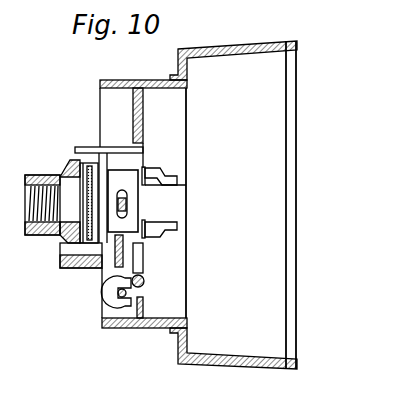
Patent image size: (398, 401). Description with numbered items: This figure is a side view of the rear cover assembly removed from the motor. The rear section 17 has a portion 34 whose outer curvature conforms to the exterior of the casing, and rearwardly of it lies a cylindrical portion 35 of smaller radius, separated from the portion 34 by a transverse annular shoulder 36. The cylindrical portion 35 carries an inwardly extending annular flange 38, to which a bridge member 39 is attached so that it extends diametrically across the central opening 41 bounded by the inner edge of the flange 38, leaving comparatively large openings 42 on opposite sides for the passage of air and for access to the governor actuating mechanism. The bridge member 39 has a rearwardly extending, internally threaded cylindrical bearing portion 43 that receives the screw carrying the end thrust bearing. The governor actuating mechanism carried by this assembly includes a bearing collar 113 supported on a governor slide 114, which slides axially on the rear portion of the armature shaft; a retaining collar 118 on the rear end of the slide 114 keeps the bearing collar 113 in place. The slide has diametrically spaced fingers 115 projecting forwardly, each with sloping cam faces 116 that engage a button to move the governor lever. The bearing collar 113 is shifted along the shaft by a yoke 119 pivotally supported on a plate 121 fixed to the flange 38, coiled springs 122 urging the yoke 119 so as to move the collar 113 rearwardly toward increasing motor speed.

The rear section 17 is at (240, 46).
The portion 34 is at (283, 46).
The cylindrical portion 35 is at (152, 80).
The transverse annular shoulder 36 is at (178, 346).
The inwardly extending flange 38 is at (135, 112).
The bridge member 39 is at (62, 175).
The central opening 41 is at (127, 168).
The openings 42 is at (86, 143).
The cylindrical bearing portion 43 is at (43, 237).
The bearing collar 113 is at (140, 170).
The governor slide 114 is at (145, 199).
The fingers 115 is at (145, 185).
The cam faces 116 is at (162, 172).
The retaining collar 118 is at (103, 265).
The yoke 119 is at (120, 262).
The plate 121 is at (143, 313).
The coiled springs 122 is at (143, 273).